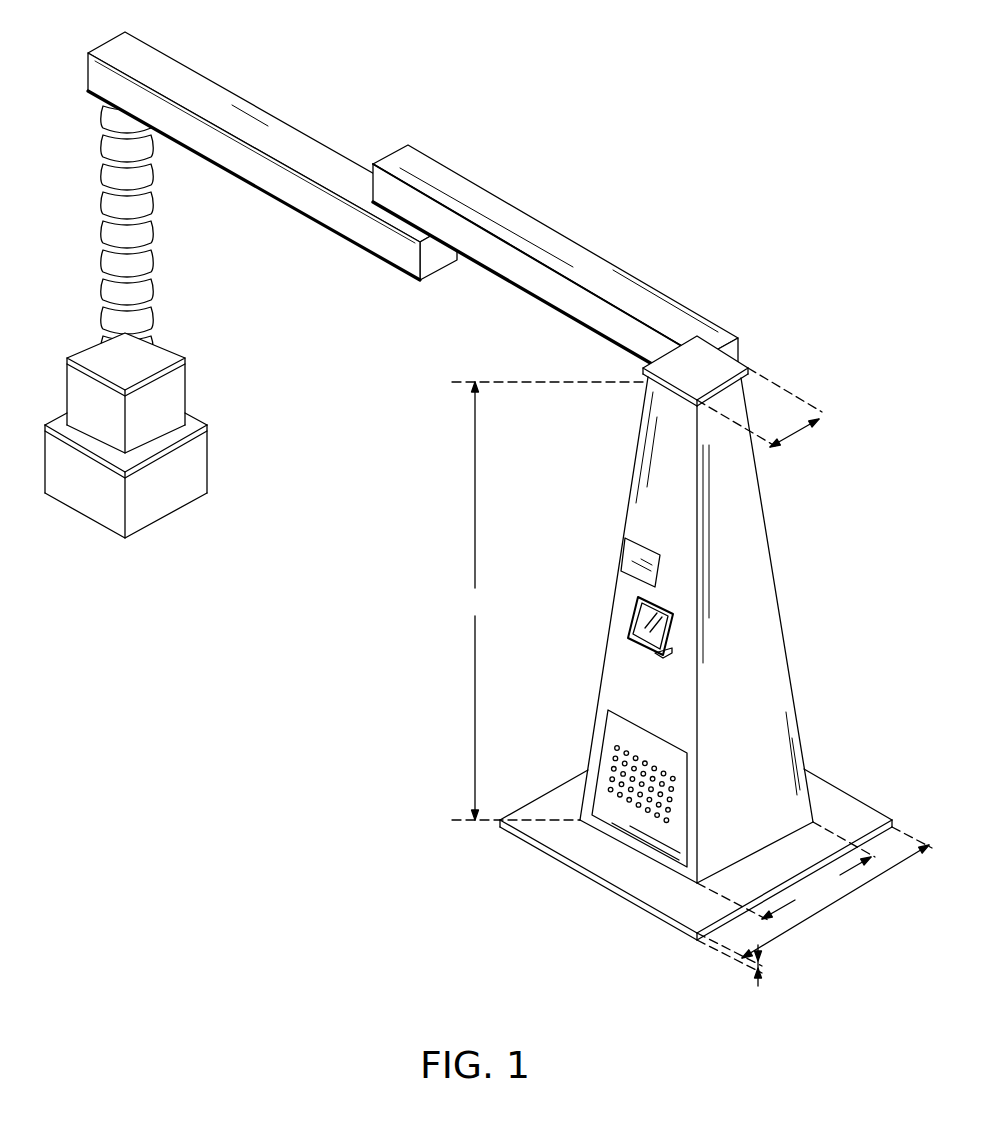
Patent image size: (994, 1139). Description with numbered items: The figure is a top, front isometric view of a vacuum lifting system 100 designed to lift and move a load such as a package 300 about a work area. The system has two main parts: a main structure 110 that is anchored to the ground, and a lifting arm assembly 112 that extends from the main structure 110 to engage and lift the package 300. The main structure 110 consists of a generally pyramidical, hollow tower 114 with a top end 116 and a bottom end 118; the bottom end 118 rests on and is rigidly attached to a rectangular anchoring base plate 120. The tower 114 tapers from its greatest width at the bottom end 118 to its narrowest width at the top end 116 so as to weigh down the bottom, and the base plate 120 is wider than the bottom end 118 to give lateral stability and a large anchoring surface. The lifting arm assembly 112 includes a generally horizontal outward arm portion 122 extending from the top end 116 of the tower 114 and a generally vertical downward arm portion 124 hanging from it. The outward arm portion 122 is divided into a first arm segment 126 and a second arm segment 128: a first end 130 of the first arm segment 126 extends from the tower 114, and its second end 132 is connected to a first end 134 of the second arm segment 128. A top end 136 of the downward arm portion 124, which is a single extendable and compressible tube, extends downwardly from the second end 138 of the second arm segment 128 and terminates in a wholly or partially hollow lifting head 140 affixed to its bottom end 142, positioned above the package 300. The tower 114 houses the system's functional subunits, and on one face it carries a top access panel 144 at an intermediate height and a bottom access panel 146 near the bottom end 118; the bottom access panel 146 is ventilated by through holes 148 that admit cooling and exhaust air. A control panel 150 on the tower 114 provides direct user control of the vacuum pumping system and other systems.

The vacuum lifting system 100 is at (563, 60).
The main structure 110 is at (838, 476).
The lifting arm assembly 112 is at (531, 126).
The tower 114 is at (768, 658).
The top end 116 is at (735, 402).
The bottom end 118 is at (793, 808).
The anchoring base plate 120 is at (637, 880).
The outward arm portion 122 is at (513, 179).
The downward arm portion 124 is at (97, 246).
The first arm segment 126 is at (540, 290).
The second arm segment 128 is at (288, 186).
The first end 130 is at (712, 343).
The second end 132 is at (408, 155).
The first end 134 is at (395, 268).
The top end 136 is at (110, 115).
The second end 138 is at (118, 48).
The lifting head 140 is at (88, 390).
The bottom end 142 is at (143, 352).
The top access panel 144 is at (628, 566).
The bottom access panel 146 is at (615, 723).
The through holes 148 is at (625, 752).
The control panel 150 is at (635, 618).
The package 300 is at (85, 505).